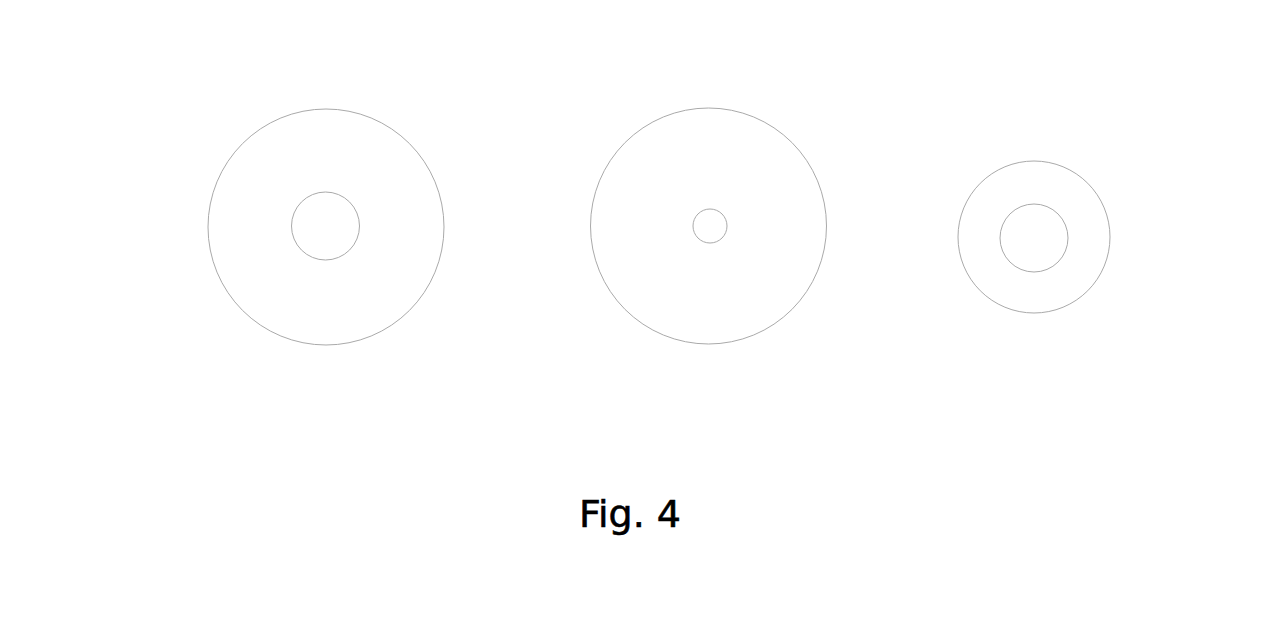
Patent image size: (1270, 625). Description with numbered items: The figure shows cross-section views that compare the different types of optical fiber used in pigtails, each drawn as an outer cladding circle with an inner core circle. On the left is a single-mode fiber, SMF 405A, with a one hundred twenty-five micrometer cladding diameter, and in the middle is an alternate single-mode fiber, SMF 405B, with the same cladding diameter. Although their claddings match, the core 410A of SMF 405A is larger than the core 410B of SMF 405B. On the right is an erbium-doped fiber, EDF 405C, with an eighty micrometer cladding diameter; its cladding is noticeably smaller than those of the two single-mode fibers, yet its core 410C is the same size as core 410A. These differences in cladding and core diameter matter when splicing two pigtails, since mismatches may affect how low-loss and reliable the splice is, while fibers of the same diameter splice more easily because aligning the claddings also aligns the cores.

The single-mode fiber (SMF) with 125 µm cladding diameter 405A is at (295, 110).
The core of SMF 405A 410A is at (306, 197).
The alternate single-mode fiber (SMF) with 125 µm cladding diameter 405B is at (695, 108).
The core of SMF 405B 410B is at (703, 210).
The erbium-doped fiber (EDF) with 80 µm cladding diameter 405C is at (1007, 165).
The core of EDF 405C 410C is at (1033, 238).